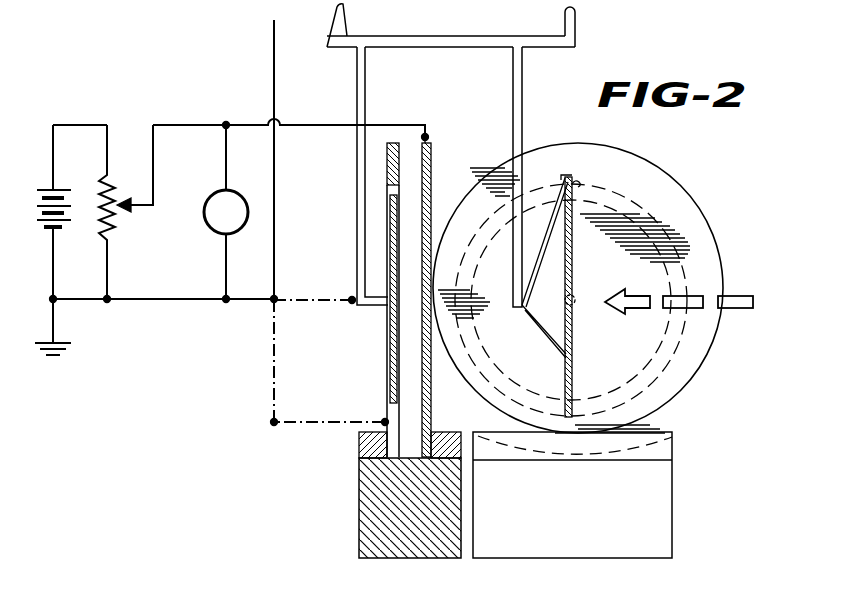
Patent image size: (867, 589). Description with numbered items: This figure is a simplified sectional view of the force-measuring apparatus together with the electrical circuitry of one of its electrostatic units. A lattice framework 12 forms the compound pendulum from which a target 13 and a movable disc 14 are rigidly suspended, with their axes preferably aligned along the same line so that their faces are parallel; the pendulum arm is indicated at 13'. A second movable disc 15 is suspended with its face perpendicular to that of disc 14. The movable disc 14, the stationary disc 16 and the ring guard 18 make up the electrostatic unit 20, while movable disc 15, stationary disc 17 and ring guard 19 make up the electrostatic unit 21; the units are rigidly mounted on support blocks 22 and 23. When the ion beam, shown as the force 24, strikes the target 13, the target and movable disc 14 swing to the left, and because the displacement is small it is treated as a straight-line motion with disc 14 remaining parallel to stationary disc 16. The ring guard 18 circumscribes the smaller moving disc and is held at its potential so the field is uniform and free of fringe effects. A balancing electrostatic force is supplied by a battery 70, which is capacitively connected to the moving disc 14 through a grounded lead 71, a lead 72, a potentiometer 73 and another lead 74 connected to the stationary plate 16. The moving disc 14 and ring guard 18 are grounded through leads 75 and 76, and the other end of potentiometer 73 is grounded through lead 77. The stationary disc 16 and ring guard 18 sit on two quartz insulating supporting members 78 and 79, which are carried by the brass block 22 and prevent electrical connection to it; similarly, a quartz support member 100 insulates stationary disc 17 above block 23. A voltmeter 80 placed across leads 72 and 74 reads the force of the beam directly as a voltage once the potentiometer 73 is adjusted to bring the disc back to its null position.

The lattice framework 12 is at (576, 32).
The target 13 is at (568, 296).
The pendulum arm 13' is at (571, 333).
The movable disc 14 is at (390, 350).
The movable disc 15 is at (663, 244).
The stationary disc 16 is at (431, 165).
The stationary disc 17 is at (642, 165).
The ring guard 18 is at (387, 155).
The ring guard 19 is at (665, 358).
The electrostatic unit 20 is at (436, 121).
The electrostatic unit 21 is at (681, 176).
The support block 22 is at (359, 506).
The support block 23 is at (664, 522).
The force (ion beam) 24 is at (688, 274).
The battery 70 is at (38, 193).
The grounded lead 71 is at (66, 345).
The lead 72 is at (162, 303).
The potentiometer 73 is at (113, 228).
The lead 74 is at (193, 118).
The lead 75 is at (300, 303).
The lead 76 is at (329, 419).
The lead 77 is at (107, 269).
The insulating supporting member 78 is at (359, 447).
The insulating supporting member 79 is at (457, 418).
The voltmeter 80 is at (210, 190).
The support member 100 is at (664, 446).